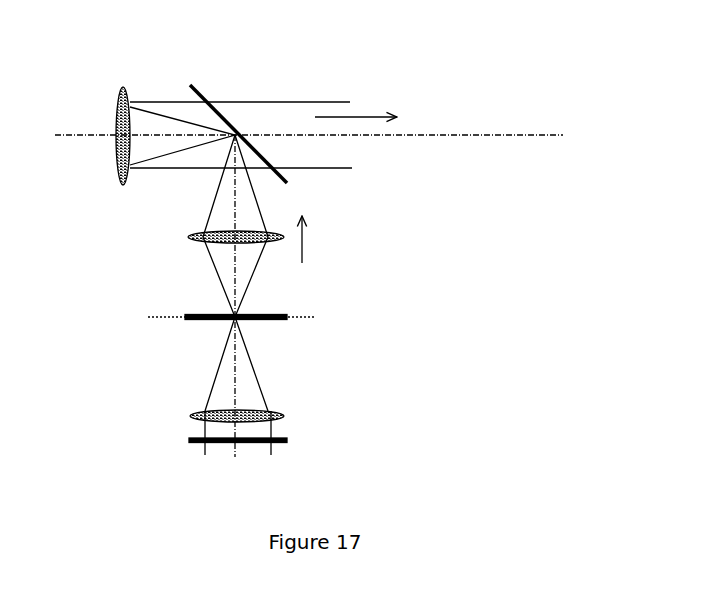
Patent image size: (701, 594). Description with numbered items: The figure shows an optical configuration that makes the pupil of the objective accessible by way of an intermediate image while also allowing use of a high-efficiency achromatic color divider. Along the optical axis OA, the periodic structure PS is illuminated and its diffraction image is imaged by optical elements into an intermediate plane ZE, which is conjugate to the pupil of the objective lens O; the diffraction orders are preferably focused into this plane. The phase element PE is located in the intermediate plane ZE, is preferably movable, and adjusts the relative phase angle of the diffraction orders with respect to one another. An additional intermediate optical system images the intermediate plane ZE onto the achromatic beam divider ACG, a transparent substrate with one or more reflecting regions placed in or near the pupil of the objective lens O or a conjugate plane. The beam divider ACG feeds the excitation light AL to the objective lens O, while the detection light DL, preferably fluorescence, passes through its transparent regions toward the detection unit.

The objective lens O is at (114, 96).
The achromatic beam divider ACG is at (203, 89).
The detection light DL is at (358, 99).
The optical axis OA is at (482, 136).
The excitation light AL is at (270, 239).
The intermediate plane ZE is at (210, 318).
The phase element PE is at (274, 323).
The periodic structure PS is at (285, 455).